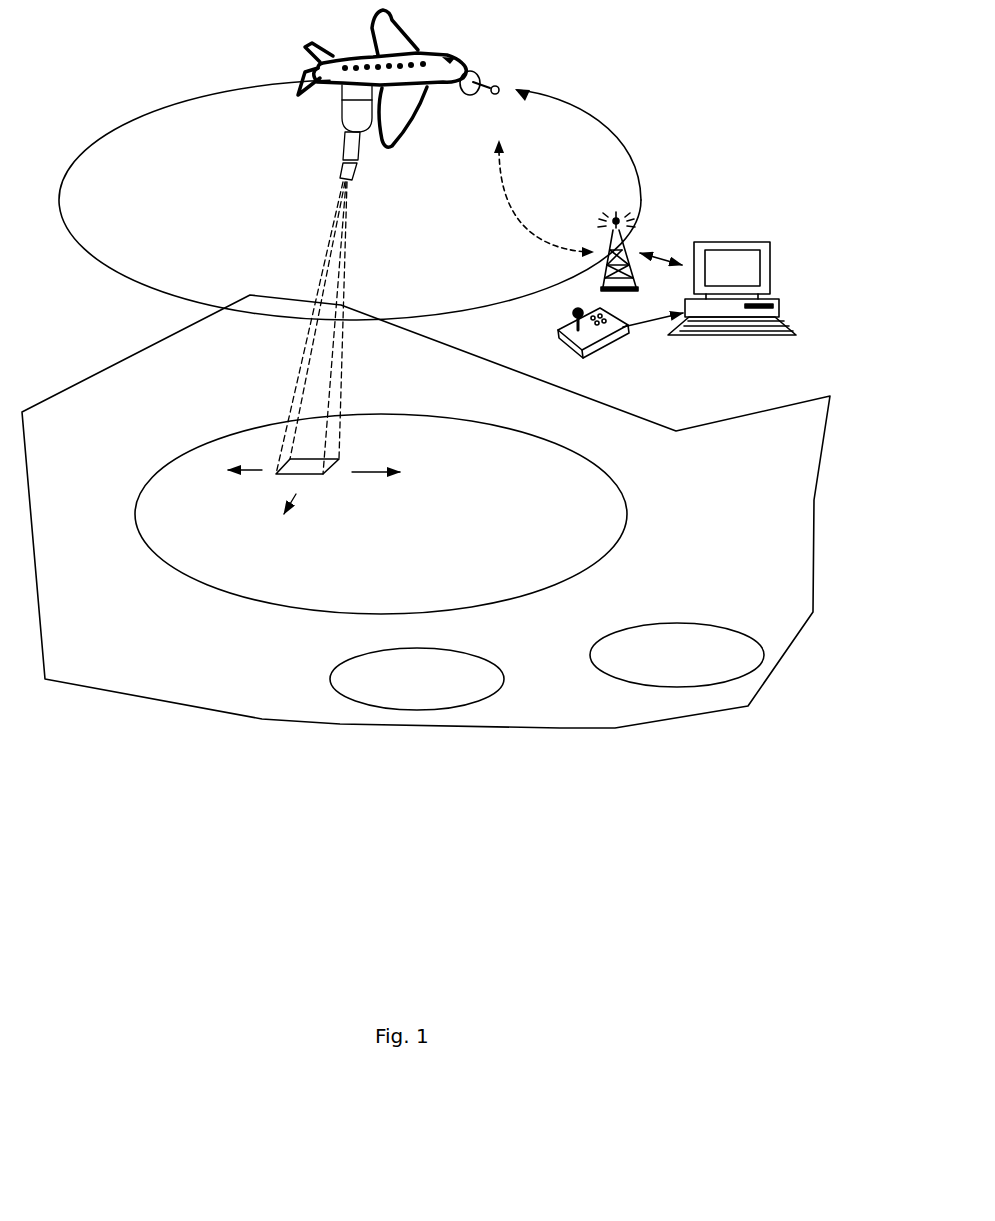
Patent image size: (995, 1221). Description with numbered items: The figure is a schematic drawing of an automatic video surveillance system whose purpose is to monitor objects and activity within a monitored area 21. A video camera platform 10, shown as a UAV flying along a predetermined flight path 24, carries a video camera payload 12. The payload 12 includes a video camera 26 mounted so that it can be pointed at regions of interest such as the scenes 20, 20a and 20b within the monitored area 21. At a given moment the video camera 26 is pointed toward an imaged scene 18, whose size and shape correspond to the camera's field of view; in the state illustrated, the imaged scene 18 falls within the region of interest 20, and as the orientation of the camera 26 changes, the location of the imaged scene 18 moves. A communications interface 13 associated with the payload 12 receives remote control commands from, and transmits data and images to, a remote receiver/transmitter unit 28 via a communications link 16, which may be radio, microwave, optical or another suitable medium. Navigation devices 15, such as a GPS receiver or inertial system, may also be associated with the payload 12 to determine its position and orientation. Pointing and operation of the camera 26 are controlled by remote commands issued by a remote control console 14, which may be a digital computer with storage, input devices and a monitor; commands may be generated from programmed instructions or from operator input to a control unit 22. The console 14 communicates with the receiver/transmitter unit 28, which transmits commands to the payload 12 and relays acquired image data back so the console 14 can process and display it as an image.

The video camera platform 10 is at (357, 57).
The video camera payload 12 is at (352, 118).
The communications interface 13 is at (490, 70).
The remote control console 14 is at (742, 247).
The navigation devices 15 is at (340, 92).
The communications link 16 is at (545, 207).
The imaged scene 18 is at (290, 462).
The region of interest 20 is at (207, 481).
The scene 20a is at (648, 668).
The scene 20b is at (387, 692).
The monitored area 21 is at (230, 714).
The control unit 22 is at (600, 352).
The flight path 24 is at (102, 108).
The video camera 26 is at (350, 150).
The receiver/transmitter unit 28 is at (627, 218).